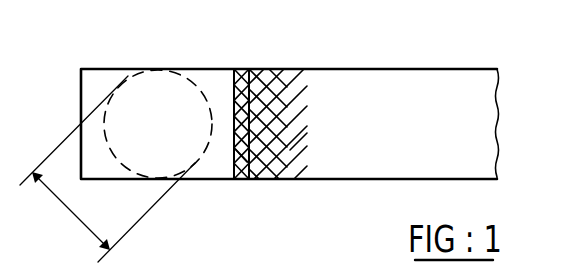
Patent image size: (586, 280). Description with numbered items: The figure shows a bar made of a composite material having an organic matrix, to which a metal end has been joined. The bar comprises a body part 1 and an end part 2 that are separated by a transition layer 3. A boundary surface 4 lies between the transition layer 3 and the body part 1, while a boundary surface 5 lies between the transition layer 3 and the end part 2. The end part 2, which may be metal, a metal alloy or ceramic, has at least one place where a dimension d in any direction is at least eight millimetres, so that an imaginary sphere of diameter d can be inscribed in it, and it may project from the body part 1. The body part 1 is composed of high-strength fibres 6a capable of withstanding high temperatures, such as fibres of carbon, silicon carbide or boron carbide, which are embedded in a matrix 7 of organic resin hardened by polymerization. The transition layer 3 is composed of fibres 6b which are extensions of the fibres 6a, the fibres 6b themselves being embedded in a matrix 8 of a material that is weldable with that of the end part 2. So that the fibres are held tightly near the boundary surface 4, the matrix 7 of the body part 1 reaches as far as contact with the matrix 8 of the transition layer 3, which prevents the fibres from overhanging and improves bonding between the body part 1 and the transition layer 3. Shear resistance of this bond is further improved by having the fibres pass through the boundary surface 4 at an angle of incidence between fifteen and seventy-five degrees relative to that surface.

The body part 1 is at (396, 66).
The end part 2 is at (106, 66).
The transition layer 3 is at (241, 62).
The boundary surface 4 is at (272, 80).
The boundary surface 5 is at (230, 88).
The high-strength fibres 6a is at (273, 147).
The fibres 6b is at (234, 128).
The matrix 7 is at (307, 127).
The matrix 8 is at (242, 158).
The dimension d is at (107, 169).